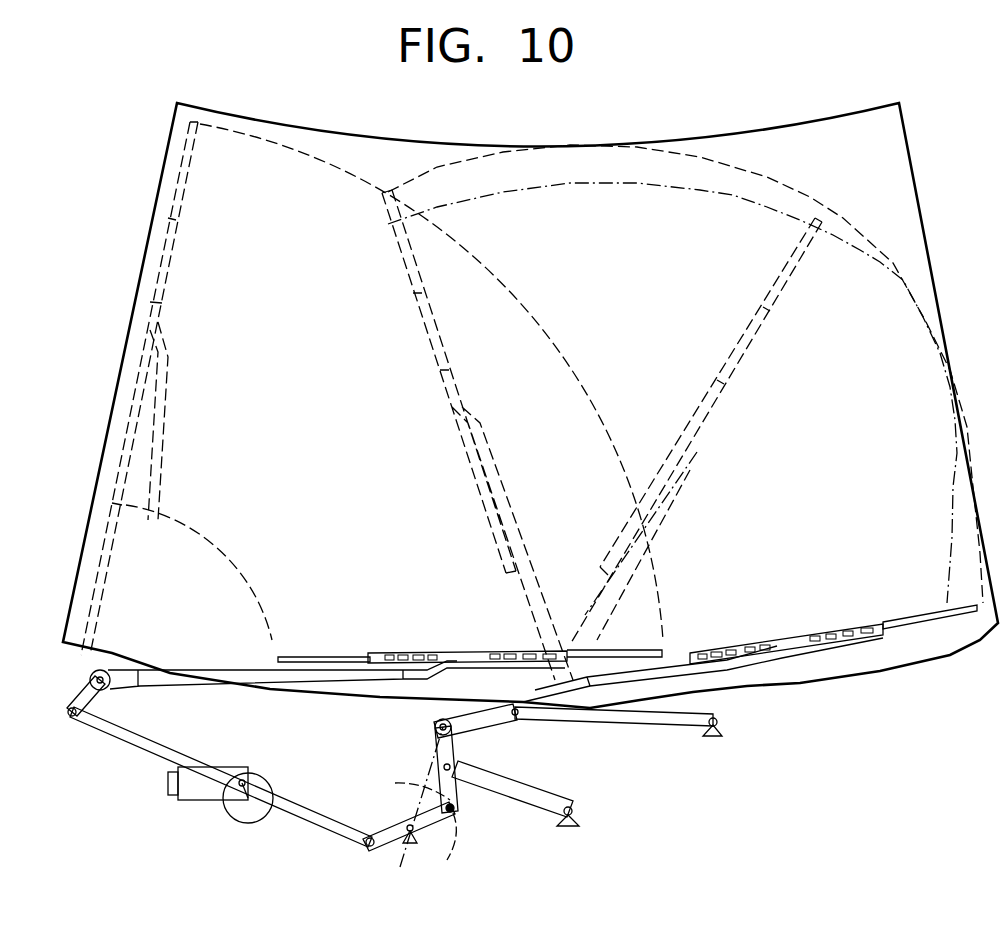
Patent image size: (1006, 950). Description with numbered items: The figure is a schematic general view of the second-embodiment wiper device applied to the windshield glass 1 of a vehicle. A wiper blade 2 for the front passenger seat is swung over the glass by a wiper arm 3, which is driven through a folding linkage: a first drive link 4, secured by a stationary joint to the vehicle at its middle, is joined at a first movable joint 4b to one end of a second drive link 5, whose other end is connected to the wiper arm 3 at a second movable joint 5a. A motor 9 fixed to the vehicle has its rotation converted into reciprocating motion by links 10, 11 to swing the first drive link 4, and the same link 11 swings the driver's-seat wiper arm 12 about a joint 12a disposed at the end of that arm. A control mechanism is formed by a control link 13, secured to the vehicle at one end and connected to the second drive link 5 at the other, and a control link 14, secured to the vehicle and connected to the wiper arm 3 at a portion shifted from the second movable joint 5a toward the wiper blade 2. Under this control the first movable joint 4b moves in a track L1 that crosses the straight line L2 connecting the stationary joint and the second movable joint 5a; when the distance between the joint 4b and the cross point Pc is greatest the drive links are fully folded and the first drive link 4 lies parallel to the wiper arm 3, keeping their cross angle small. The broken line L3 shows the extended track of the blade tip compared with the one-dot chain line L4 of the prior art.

The windshield glass 1 is at (885, 167).
The wiper blade 2 is at (372, 658).
The wiper arm 3 is at (480, 716).
The first drive link 4 is at (422, 820).
The first movable joint 4b is at (458, 809).
The second drive link 5 is at (452, 748).
The second movable joint 5a is at (437, 726).
The motor 9 is at (197, 792).
The link 10 is at (248, 800).
The link 11 is at (300, 817).
The wiper arm 12 is at (212, 677).
The joint 12a is at (90, 680).
The control link 13 is at (548, 793).
The control link 14 is at (643, 720).
The track L1 is at (455, 848).
The straight line L2 is at (403, 850).
The broken line L3 is at (867, 233).
The one-dot chain line L4 is at (862, 250).
The cross point Pc is at (427, 785).